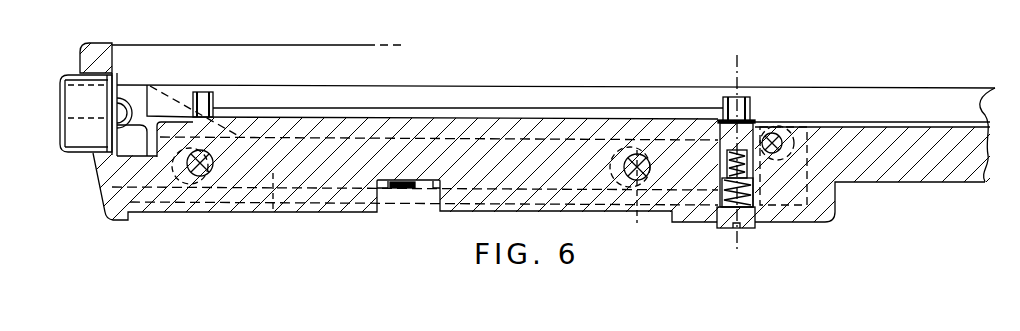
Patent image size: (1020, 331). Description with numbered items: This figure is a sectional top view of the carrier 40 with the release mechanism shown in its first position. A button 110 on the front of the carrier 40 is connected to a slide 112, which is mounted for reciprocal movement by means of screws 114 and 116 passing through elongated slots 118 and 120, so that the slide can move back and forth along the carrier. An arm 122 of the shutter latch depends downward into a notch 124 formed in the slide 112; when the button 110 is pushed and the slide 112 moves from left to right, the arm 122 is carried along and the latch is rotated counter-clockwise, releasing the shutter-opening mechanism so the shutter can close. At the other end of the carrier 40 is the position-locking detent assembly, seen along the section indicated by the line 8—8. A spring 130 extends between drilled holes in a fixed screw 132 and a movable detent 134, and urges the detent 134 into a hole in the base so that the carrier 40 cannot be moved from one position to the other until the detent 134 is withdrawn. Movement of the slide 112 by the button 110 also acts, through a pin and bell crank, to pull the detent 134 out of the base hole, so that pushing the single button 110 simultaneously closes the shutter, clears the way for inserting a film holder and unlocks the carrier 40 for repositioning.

The section line 8- 8 is at (760, 251).
The carrier 40 is at (862, 176).
The button 110 is at (75, 119).
The slide 112 is at (273, 213).
The screw 114 is at (193, 201).
The screw 116 is at (636, 210).
The elongated slot 118 is at (186, 199).
The elongated slot 120 is at (630, 205).
The arm 122 is at (398, 188).
The notch 124 is at (421, 186).
The spring 130 is at (721, 186).
The fixed screw 132 is at (757, 226).
The detent 134 is at (752, 109).